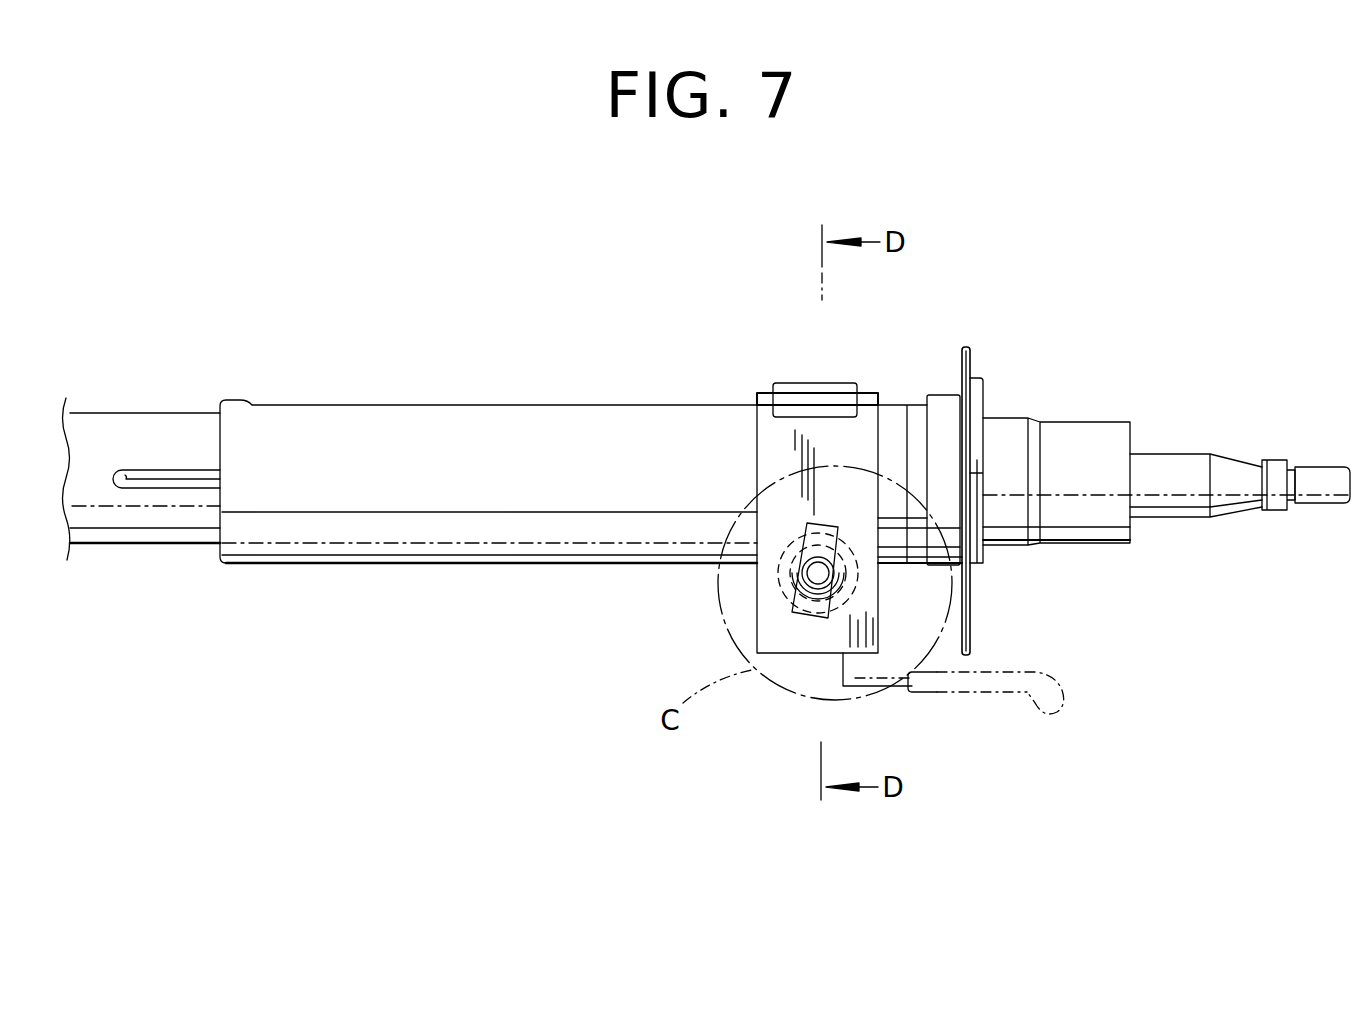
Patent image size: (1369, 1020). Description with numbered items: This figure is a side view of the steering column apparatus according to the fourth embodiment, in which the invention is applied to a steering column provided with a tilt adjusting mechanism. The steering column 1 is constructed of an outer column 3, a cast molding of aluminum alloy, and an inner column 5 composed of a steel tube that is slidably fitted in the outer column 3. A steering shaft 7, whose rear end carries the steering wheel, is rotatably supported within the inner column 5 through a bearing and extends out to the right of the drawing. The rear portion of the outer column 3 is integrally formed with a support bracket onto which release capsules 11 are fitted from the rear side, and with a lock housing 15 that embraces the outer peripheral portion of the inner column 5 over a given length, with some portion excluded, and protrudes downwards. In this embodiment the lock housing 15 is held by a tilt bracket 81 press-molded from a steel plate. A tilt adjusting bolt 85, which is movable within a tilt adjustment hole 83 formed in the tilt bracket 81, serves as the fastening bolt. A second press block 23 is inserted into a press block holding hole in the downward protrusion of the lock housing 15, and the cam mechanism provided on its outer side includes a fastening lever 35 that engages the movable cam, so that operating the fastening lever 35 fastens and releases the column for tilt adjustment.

The steering column 1 is at (526, 352).
The outer column 3 is at (387, 412).
The inner column 5 is at (1072, 440).
The steering shaft 7 is at (1228, 467).
The release capsules 11 is at (822, 383).
The lock housing 15 is at (832, 478).
The second press block 23 is at (780, 568).
The fastening lever 35 is at (973, 687).
The tilt bracket 81 is at (727, 407).
The tilt adjustment hole 83 is at (818, 590).
The tilt adjusting bolt 85 is at (775, 567).